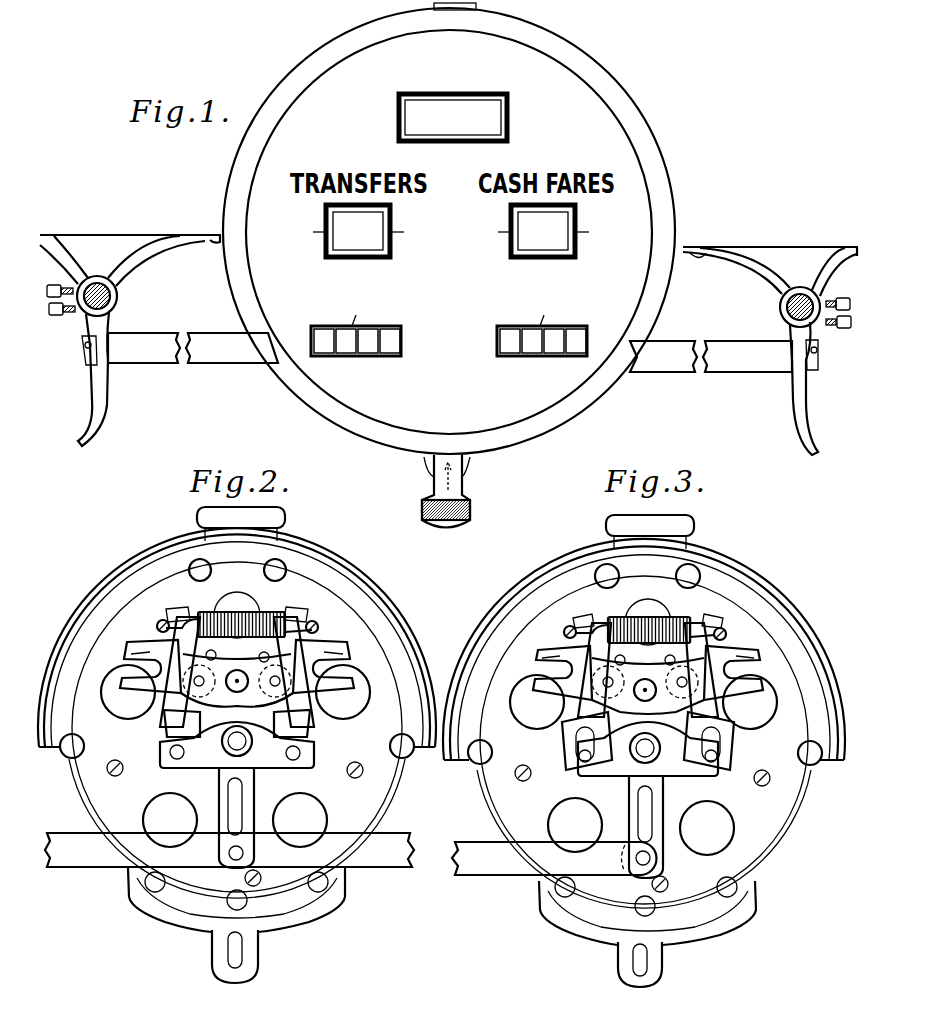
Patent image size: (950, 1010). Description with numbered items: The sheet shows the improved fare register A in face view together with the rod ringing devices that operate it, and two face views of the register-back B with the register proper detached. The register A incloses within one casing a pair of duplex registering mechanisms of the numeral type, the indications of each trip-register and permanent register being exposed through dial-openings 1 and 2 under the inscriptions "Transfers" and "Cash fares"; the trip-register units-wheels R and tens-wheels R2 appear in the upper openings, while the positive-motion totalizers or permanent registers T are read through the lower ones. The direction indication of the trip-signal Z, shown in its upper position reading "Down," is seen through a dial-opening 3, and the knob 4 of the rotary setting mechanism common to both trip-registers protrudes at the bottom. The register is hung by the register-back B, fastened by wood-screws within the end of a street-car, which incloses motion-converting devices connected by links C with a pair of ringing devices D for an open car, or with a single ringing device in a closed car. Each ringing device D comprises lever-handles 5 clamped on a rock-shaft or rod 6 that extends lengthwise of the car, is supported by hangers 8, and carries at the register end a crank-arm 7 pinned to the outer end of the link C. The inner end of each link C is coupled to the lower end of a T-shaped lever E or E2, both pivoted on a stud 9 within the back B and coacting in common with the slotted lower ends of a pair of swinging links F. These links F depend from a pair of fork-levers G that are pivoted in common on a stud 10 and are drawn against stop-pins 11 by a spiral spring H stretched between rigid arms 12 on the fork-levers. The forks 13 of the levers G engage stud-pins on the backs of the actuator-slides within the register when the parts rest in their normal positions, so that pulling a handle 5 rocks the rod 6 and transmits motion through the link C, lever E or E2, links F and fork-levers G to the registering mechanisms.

In FIG. 1, the dial-opening 1 is at (450, 244).
In FIG. 1, the dial-opening 2 is at (449, 354).
In FIG. 1, the dial-opening 3 is at (453, 129).
In FIG. 1, the knob 4 is at (456, 491).
In FIG. 1, the lever-handles 5 is at (455, 383).
In FIG. 1, the rock-shaft or rod 6 is at (117, 294).
In FIG. 1, the crank-arm 7 is at (110, 327).
In FIG. 1, the hangers 8 is at (448, 287).
In FIG. 2, the stud 9 is at (230, 745).
In FIG. 3, the stud 9 is at (638, 752).
In FIG. 2, the stud 10 is at (237, 684).
In FIG. 3, the stud 10 is at (646, 694).
In FIG. 2, the stop-pins 11 is at (238, 669).
In FIG. 3, the stop-pins 11 is at (648, 670).
In FIG. 2, the rigid arms 12 is at (237, 609).
In FIG. 3, the rigid arms 12 is at (645, 613).
In FIG. 2, the forks 13 is at (237, 655).
In FIG. 3, the forks 13 is at (544, 671).
In FIG. 1, the register A is at (606, 85).
In FIG. 2, the register-back B is at (237, 745).
In FIG. 3, the register-back B is at (644, 751).
In FIG. 1, the links C is at (450, 353).
In FIG. 2, the links C is at (229, 850).
In FIG. 3, the links C is at (554, 858).
In FIG. 1, the ringing devices D is at (778, 243).
In FIG. 2, the T-shaped lever E is at (237, 795).
In FIG. 3, the T-shaped lever E2 is at (648, 800).
In FIG. 2, the swinging links F is at (168, 731).
In FIG. 3, the swinging links F is at (578, 739).
In FIG. 2, the fork-levers G is at (235, 666).
In FIG. 3, the fork-levers G is at (648, 664).
In FIG. 2, the spiral spring H is at (239, 614).
In FIG. 3, the spiral spring H is at (645, 619).
In FIG. 1, the units-wheels R is at (498, 233).
In FIG. 1, the tens-wheels R2 is at (400, 233).
In FIG. 1, the permanent registers T is at (450, 310).
In FIG. 1, the trip-signal Z is at (448, 99).